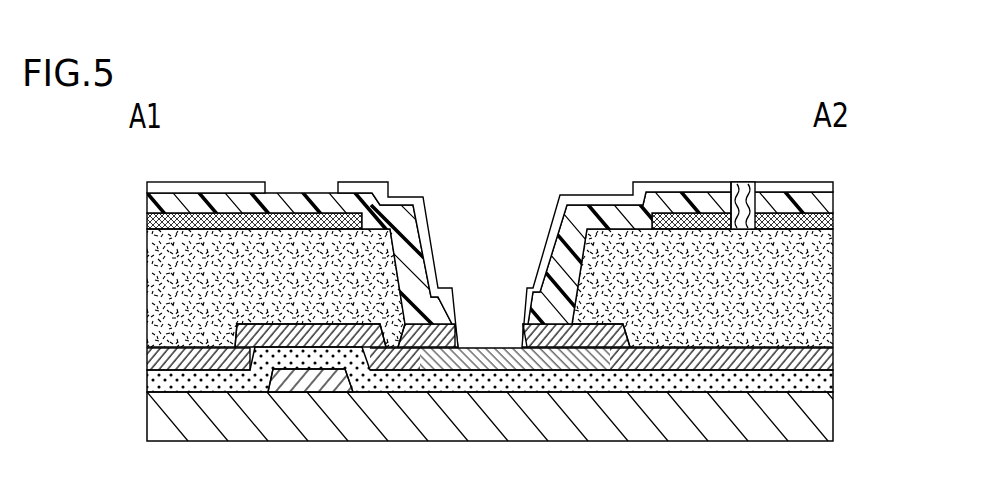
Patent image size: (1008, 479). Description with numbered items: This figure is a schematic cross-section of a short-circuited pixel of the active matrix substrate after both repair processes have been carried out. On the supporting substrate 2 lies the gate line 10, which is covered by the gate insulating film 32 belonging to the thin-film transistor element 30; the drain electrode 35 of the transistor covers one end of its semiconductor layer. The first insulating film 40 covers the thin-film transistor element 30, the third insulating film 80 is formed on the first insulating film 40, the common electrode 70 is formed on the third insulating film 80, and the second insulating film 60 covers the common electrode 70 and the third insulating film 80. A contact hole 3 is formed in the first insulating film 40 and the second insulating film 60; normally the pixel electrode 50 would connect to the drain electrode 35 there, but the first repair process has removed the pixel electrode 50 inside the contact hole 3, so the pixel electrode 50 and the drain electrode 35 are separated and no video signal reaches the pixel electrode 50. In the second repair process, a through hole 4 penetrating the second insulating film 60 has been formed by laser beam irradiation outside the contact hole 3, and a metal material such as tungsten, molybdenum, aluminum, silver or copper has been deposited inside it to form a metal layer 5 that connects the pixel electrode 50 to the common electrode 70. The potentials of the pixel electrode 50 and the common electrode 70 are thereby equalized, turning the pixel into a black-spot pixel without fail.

The supporting substrate 2 is at (152, 430).
The gate line 10 is at (267, 385).
The thin-film transistor element 30 is at (70, 338).
The gate insulating film 32 is at (160, 377).
The drain electrode 35 is at (250, 358).
The first insulating film 40 is at (237, 337).
The third insulating film 80 is at (155, 285).
The common electrode 70 is at (147, 222).
The second insulating film 60 is at (147, 207).
The pixel electrode 50 is at (147, 189).
The through hole 4 is at (751, 181).
The metal layer 5 is at (734, 189).
The contact hole 3 is at (492, 230).